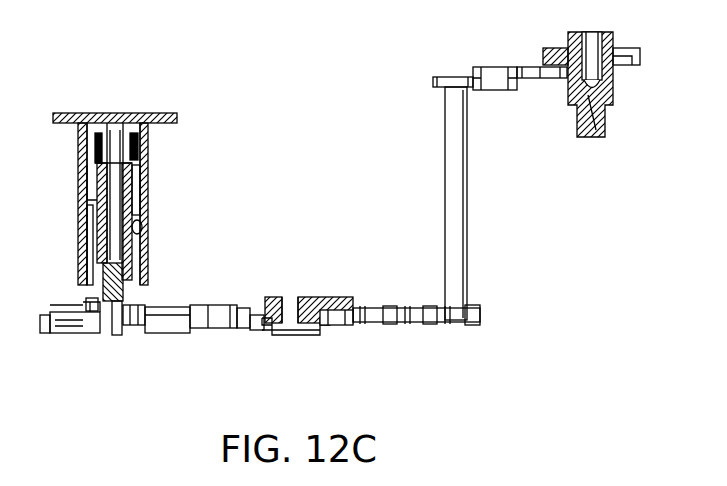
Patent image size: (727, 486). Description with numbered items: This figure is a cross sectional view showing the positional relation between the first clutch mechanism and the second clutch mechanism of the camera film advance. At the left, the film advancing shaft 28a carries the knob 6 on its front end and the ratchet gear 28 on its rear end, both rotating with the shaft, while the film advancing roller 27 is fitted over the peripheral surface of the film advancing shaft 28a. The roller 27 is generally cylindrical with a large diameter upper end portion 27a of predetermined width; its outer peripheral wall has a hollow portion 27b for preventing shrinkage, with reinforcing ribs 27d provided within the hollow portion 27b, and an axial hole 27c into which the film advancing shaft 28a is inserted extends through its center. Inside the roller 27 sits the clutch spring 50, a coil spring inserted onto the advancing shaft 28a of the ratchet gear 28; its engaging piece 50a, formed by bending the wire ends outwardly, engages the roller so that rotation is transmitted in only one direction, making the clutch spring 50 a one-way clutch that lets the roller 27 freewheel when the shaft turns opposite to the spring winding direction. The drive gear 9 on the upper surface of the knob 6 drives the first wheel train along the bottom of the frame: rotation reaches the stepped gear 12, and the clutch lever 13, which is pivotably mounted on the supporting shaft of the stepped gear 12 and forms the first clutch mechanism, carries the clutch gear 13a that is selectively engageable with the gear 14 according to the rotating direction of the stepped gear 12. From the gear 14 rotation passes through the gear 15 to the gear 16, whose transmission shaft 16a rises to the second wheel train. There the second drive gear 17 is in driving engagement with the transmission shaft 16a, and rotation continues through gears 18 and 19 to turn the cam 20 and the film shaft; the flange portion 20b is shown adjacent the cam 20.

The knob 6 is at (48, 335).
The drive gear 9 is at (50, 306).
The stepped gear 12 is at (270, 336).
The clutch lever 13 is at (310, 296).
The clutch gear 13a is at (345, 327).
The gear 14 is at (388, 323).
The gear 15 is at (428, 323).
The gear 16 is at (470, 324).
The transmission shaft 16a is at (468, 212).
The second drive gear 17 is at (443, 76).
The gear 18 is at (478, 66).
The gear 19 is at (522, 66).
The cam 20 is at (632, 47).
The flange 20b is at (630, 66).
The film advancing roller 27 is at (66, 199).
The upper end portion 27a is at (150, 140).
The hollow portion 27b is at (186, 228).
The axial hole 27c is at (90, 297).
The reinforcing ribs 27d is at (80, 220).
The ratchet gear 28 is at (60, 112).
The film advancing shaft 28a is at (145, 297).
The clutch spring 50 is at (82, 155).
The engaging piece 50a is at (150, 170).